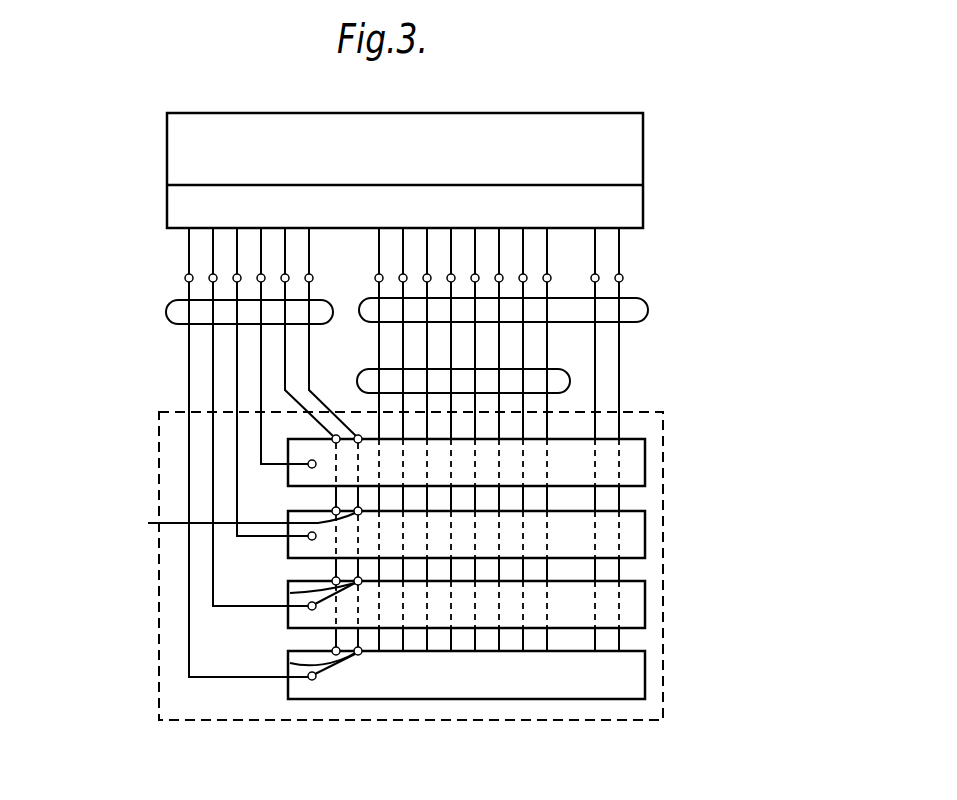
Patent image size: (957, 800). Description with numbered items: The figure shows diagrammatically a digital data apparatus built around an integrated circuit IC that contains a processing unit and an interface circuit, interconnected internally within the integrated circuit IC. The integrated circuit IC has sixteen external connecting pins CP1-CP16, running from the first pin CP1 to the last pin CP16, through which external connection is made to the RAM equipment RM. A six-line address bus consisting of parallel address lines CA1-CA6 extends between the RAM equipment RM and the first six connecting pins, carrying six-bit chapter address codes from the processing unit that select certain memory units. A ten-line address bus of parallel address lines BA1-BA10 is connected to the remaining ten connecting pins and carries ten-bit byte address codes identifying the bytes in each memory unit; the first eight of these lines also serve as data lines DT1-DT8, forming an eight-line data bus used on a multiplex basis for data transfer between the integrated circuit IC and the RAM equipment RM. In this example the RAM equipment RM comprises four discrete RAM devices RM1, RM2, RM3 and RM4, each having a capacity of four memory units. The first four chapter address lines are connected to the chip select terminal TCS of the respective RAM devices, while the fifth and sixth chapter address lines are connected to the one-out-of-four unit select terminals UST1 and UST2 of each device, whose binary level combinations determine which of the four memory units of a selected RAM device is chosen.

The integrated circuit IC is at (650, 151).
The external connecting pins CP1-CP16 is at (163, 279).
The first connecting pin CP1 is at (187, 274).
The sixteenth connecting pin CP16 is at (621, 274).
The chapter address lines CA1-CA6 is at (166, 314).
The byte address lines BA1-BA10 is at (648, 310).
The data lines DT1-DT8 is at (570, 381).
The RAM equipment RM is at (158, 683).
The fourth RAM device RM4 is at (645, 473).
The third RAM device RM3 is at (645, 542).
The second RAM device RM2 is at (646, 615).
The first RAM device RM1 is at (646, 685).
The first unit select terminal UST1 is at (332, 437).
The second unit select terminal UST2 is at (358, 435).
The chip select terminal TCS is at (309, 466).